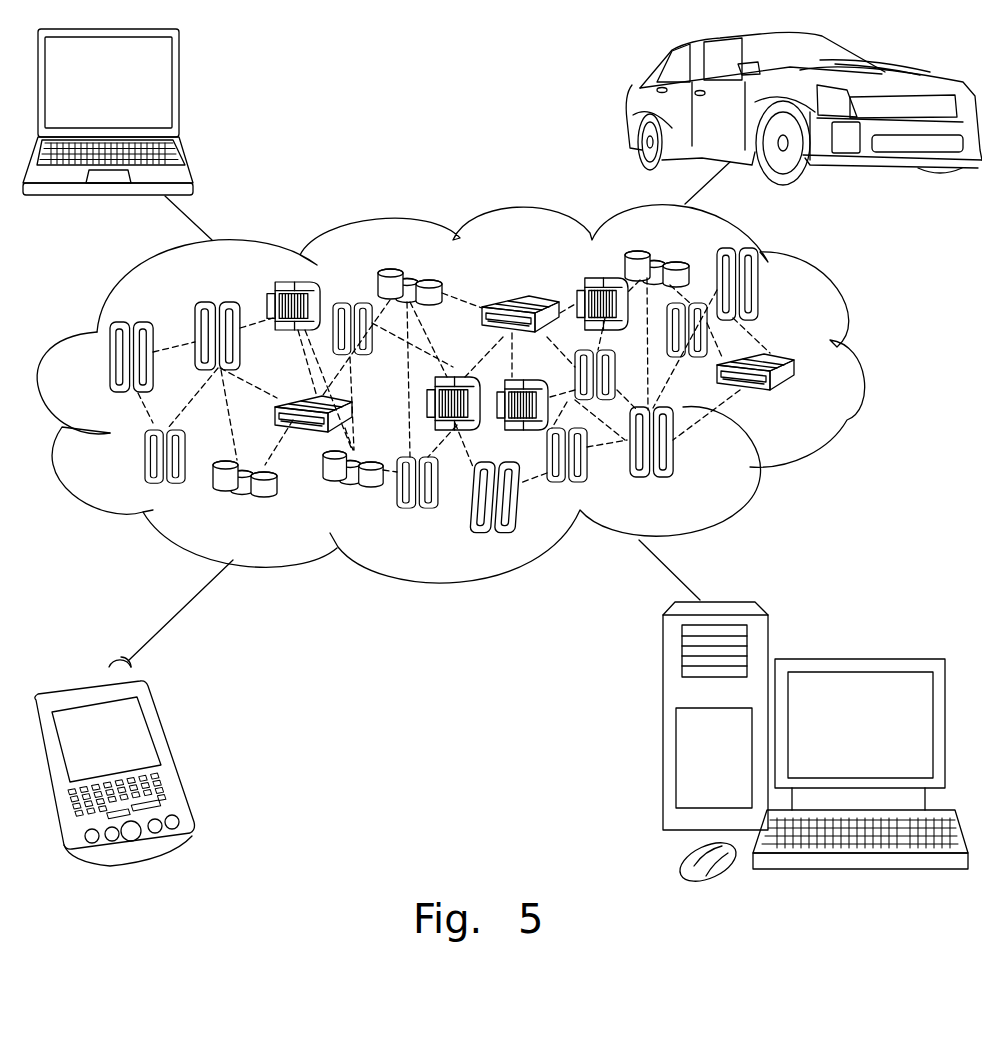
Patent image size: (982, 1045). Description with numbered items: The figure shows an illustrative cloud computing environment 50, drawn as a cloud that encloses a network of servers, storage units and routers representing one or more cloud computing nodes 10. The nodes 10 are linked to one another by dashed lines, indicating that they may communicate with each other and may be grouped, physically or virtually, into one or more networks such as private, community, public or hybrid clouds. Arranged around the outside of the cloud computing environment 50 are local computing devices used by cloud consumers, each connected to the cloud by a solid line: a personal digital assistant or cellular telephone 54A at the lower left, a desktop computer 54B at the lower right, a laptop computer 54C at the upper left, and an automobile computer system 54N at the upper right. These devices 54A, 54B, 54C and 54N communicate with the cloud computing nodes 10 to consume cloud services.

The cloud computing node 10 is at (798, 398).
The cloud computing environment 50 is at (480, 394).
The personal digital assistant or cellular telephone 54A is at (171, 756).
The desktop computer 54B is at (860, 659).
The laptop computer 54C is at (183, 95).
The automobile computer system 54N is at (636, 112).